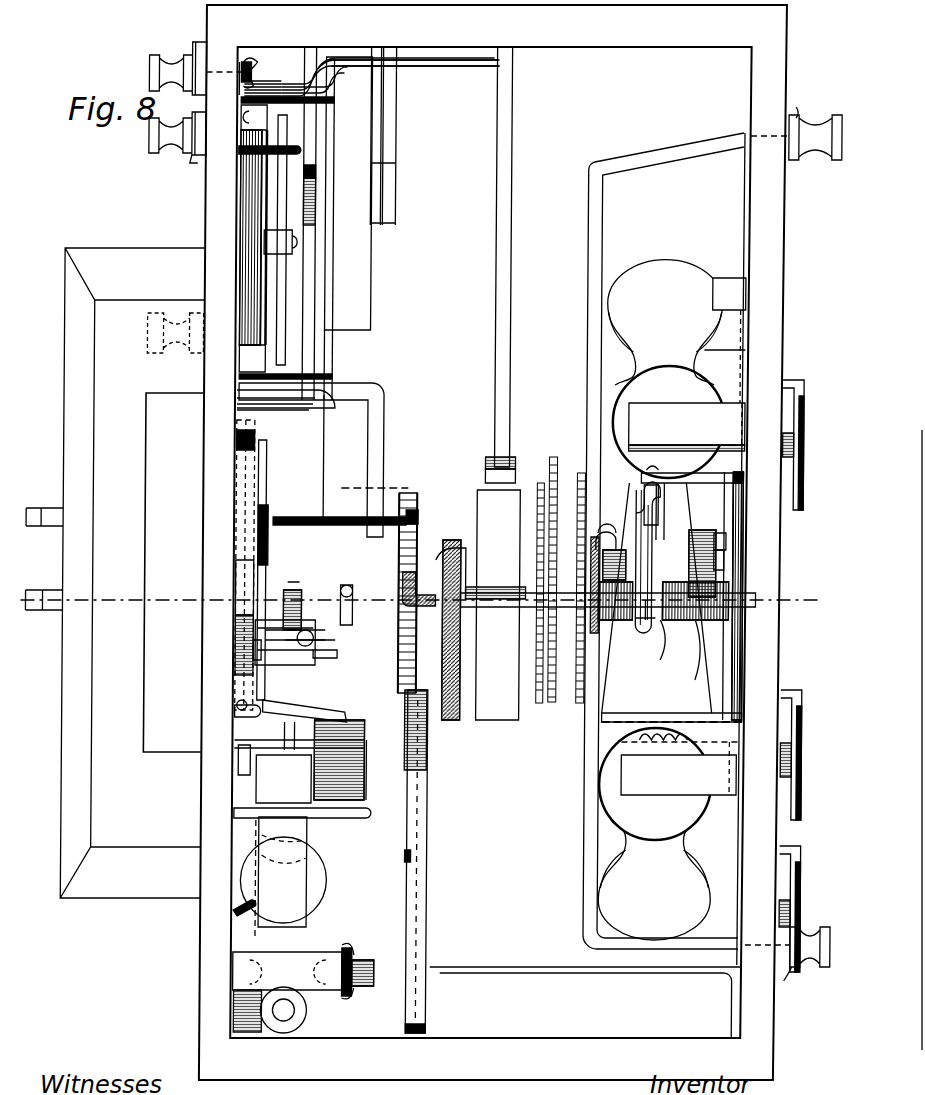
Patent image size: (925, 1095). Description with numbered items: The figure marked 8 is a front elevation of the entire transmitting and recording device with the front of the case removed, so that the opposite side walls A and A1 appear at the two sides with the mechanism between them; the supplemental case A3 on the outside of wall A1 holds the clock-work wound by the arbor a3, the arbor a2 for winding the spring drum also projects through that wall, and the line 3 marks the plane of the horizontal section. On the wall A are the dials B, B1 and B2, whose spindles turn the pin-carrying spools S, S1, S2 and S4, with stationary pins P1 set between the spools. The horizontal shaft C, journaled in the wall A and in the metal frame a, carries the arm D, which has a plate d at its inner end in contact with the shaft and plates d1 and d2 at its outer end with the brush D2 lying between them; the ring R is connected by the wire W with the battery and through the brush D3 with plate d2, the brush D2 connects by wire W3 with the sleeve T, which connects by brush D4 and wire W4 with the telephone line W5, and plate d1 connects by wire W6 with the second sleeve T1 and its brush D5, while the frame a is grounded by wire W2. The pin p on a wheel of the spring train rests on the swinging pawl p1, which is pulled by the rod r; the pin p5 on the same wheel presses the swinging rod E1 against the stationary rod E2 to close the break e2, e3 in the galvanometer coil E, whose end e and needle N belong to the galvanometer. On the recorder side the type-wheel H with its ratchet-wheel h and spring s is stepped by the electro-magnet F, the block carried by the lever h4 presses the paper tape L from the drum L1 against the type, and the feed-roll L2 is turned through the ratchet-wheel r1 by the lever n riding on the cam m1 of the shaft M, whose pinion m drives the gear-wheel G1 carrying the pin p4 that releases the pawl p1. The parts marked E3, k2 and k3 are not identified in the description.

The side wall A is at (776, 300).
The side wall A1 is at (207, 211).
The supplemental case A3 is at (148, 573).
The arbor a2 is at (52, 608).
The arbor a3 is at (50, 526).
The section line 3 is at (410, 545).
The spool rollers E3 is at (268, 158).
The galvanometer coil E is at (254, 262).
The galvanometer coil end e is at (249, 74).
The galvanometer wire end e2 is at (466, 58).
The galvanometer wire end e3 is at (440, 58).
The needle N is at (280, 290).
The drum L1 is at (376, 300).
The stationary conducting rod E2 is at (514, 392).
The pin p5 is at (492, 470).
The swinging conducting rod E1 is at (516, 478).
The paper tape L is at (360, 480).
The shaft M is at (300, 516).
The pinion m is at (416, 512).
The lever n is at (258, 447).
The swinging pawl p1 is at (240, 487).
The cam m1 is at (240, 482).
The type-wheel H is at (403, 600).
The gear-wheel G1 is at (426, 782).
The rod r is at (428, 606).
The metal frame a is at (463, 630).
The horizontal shaft C is at (525, 590).
The spool S1 is at (488, 540).
The pin p4 is at (505, 548).
The pin p is at (452, 546).
The wire W6 is at (640, 478).
The plate d2 is at (650, 495).
The brush D2 is at (620, 532).
The plate d1 is at (687, 500).
The rotating arm D is at (697, 562).
The brush D3 is at (746, 503).
The brush D4 is at (730, 582).
The plate d is at (660, 620).
The wire W3 is at (673, 618).
The spool S4 is at (735, 630).
The sleeve T is at (742, 632).
The ring R is at (770, 648).
The brush D5 is at (652, 598).
The sleeve T1 is at (672, 696).
The stationary pins P1 is at (688, 480).
The spool S is at (680, 360).
The spool S2 is at (690, 842).
The ground wire W2 is at (697, 143).
The telephone line W5 is at (594, 872).
The wire W4 is at (748, 216).
The dial B is at (812, 470).
The dial B1 is at (807, 798).
The dial B2 is at (808, 894).
The wire W is at (762, 836).
The block k2 is at (296, 588).
The ratchet-wheel h is at (322, 596).
The pin 8 is at (246, 648).
The lever h4 is at (245, 714).
The lever k3 is at (335, 706).
The feed-roll L2 is at (372, 785).
The ratchet-wheel r1 is at (246, 762).
The electro-magnet F is at (320, 828).
The spring s is at (300, 945).